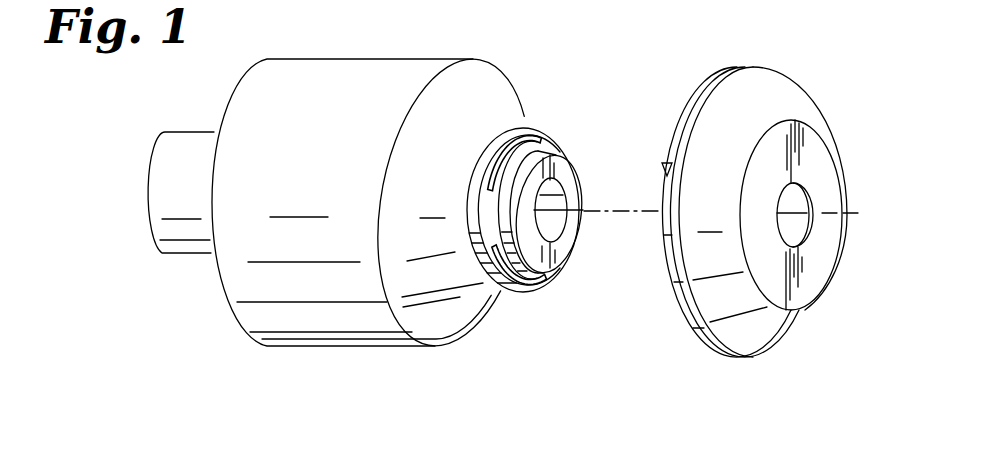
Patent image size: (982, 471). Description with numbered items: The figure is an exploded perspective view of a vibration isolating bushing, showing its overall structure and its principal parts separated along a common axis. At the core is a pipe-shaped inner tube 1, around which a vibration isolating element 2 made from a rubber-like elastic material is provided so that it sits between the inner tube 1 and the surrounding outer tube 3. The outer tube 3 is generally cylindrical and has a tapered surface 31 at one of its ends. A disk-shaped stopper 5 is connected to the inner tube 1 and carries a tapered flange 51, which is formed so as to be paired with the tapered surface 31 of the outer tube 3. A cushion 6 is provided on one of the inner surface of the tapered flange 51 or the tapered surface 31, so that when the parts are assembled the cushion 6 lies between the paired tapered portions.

The inner tube 1 is at (188, 256).
The vibration isolating element 2 is at (531, 128).
The outer tube 3 is at (320, 348).
The tapered surface 31 is at (478, 318).
The stopper 5 is at (843, 154).
The tapered flange 51 is at (782, 85).
The cushion 6 is at (690, 95).